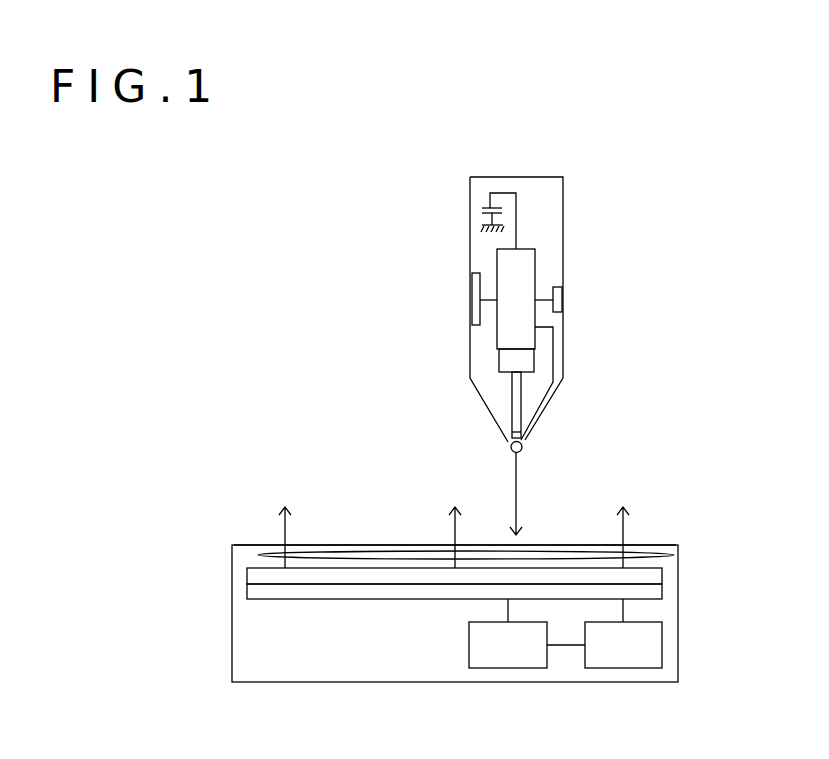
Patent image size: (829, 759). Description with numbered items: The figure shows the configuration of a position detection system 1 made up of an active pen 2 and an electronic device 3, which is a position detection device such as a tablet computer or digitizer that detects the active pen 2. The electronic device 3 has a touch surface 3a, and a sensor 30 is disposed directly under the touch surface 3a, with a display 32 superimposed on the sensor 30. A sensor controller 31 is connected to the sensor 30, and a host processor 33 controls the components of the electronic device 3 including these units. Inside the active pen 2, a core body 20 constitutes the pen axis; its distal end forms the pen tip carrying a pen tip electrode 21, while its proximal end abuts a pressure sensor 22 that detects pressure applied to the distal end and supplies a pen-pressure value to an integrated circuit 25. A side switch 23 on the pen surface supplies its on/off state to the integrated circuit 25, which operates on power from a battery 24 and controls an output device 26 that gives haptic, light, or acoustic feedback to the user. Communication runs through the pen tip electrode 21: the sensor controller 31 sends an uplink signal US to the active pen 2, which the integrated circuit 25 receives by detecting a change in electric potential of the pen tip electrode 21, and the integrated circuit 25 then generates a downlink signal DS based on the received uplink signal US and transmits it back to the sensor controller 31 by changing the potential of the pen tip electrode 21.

The position detection system 1 is at (270, 348).
The active pen 2 is at (548, 176).
The core body 20 is at (511, 388).
The pen tip electrode 21 is at (521, 444).
The pressure sensor 22 is at (534, 360).
The side switch 23 is at (562, 298).
The battery 24 is at (490, 202).
The integrated circuit 25 is at (535, 262).
The output device 26 is at (472, 300).
The electronic device 3 is at (455, 583).
The touch surface 3a is at (243, 545).
The sensor 30 is at (247, 575).
The display 32 is at (247, 592).
The sensor controller 31 is at (522, 658).
The host processor 33 is at (637, 658).
The downlink signal DS is at (517, 483).
The uplink signal US is at (676, 551).